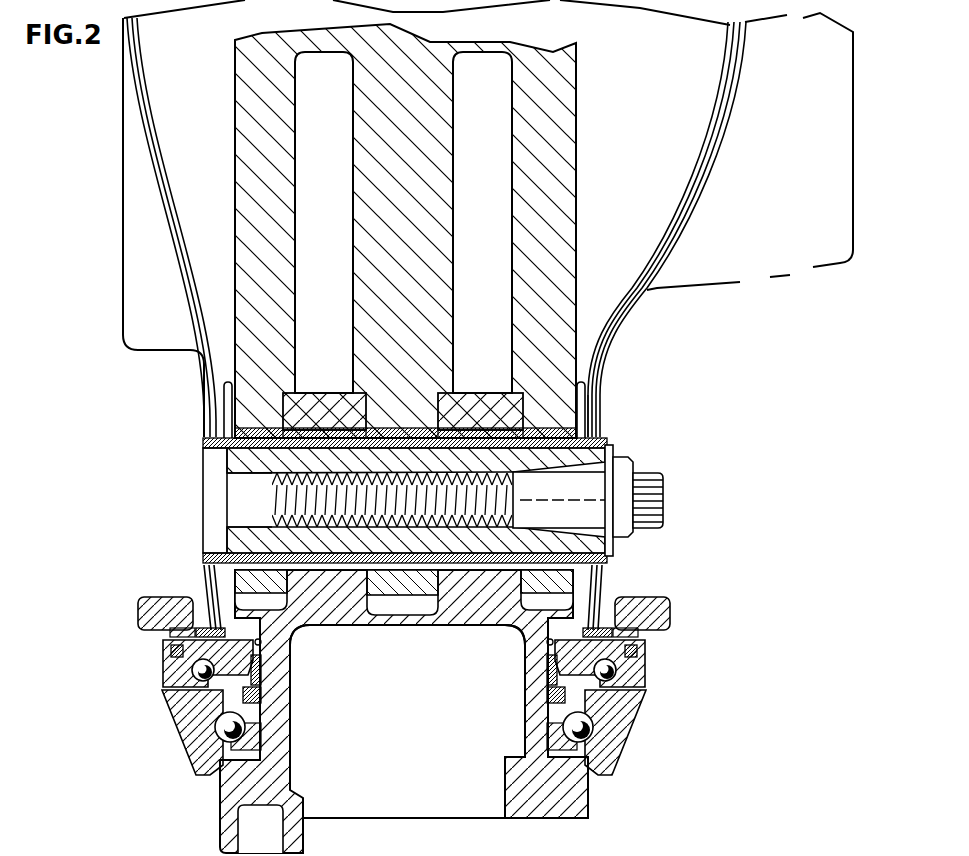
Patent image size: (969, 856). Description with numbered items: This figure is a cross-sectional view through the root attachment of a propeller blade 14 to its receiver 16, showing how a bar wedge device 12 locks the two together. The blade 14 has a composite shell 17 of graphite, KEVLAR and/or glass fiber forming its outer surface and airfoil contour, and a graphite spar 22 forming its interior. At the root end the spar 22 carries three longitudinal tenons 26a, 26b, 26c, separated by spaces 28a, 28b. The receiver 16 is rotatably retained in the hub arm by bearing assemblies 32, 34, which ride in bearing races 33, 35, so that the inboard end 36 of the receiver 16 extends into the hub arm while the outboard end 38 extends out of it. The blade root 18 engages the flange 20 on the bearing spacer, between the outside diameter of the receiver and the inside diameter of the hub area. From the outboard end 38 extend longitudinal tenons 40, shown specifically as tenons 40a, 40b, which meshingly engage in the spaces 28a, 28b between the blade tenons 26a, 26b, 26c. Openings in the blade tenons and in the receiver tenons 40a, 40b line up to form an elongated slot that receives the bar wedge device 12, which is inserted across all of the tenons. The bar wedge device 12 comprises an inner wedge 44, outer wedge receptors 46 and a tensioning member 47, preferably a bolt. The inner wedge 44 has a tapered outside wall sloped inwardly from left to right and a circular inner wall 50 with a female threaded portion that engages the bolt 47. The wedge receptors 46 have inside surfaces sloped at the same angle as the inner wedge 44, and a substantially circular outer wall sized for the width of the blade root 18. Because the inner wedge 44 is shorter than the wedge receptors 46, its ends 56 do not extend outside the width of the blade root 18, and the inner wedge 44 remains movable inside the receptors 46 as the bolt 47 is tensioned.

The bar wedge device 12 is at (603, 480).
The blade 14 is at (127, 127).
The receiver 16 is at (404, 712).
The composite shell 17 is at (717, 155).
The blade root 18 is at (203, 573).
The flange 20 is at (190, 632).
The graphite spar 22 is at (577, 258).
The tenon 26a is at (268, 592).
The tenon 26b is at (408, 590).
The tenon 26c is at (533, 593).
The space 28a is at (328, 395).
The space 28b is at (482, 395).
The bearing assembly 32 is at (192, 670).
The bearing race 33 is at (170, 715).
The bearing assembly 34 is at (247, 713).
The bearing race 35 is at (213, 748).
The inboard end 36 is at (517, 820).
The outboard end 38 is at (627, 383).
The tenons 40 is at (407, 668).
The tenon 40a is at (322, 590).
The tenon 40b is at (480, 592).
The inner wedge 44 is at (232, 463).
The outer wedge receptor 46 is at (613, 445).
The tensioning member 47 is at (640, 533).
The circular inner wall 50 is at (242, 475).
The ends 56 is at (227, 540).